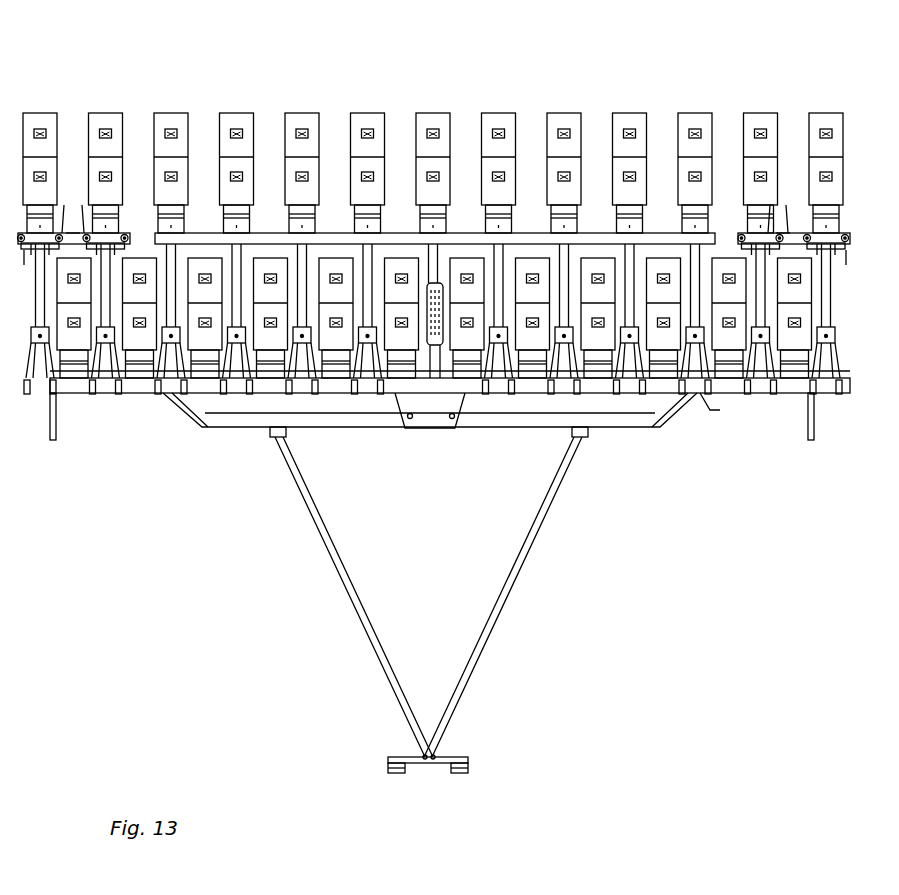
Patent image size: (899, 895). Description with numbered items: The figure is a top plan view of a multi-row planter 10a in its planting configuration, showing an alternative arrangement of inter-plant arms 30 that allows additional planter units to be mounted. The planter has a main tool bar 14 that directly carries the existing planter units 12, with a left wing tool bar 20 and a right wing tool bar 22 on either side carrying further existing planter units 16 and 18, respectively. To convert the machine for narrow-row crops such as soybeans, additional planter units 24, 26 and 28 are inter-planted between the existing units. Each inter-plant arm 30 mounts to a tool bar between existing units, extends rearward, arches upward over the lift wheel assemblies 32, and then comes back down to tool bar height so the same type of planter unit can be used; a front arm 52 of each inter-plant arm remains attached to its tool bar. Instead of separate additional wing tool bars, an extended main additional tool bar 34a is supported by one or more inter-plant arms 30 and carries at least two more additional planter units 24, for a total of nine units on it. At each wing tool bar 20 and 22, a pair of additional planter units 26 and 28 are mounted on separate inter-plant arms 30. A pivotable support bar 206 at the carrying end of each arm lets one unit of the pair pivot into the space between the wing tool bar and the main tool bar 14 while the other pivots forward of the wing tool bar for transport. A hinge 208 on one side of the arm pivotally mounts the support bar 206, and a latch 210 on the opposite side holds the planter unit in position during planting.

The planter 10a is at (190, 492).
The existing planter units 12 is at (320, 375).
The main tool bar 14 is at (430, 400).
The existing planter units 16 is at (128, 378).
The existing planter units 18 is at (715, 395).
The left wing tool bar 20 is at (78, 395).
The right wing tool bar 22 is at (810, 395).
The additional planter units 24 is at (367, 113).
The additional planter units 26 is at (171, 113).
The additional planter units 28 is at (826, 113).
The inter-plant arms 30 is at (128, 250).
The lift wheel assemblies 32 is at (500, 300).
The extended main additional tool bar 34a is at (470, 233).
The front arm 52 is at (100, 265).
The pivotable support bar 206 is at (76, 182).
The hinge 208 is at (18, 113).
The latch 210 is at (80, 233).